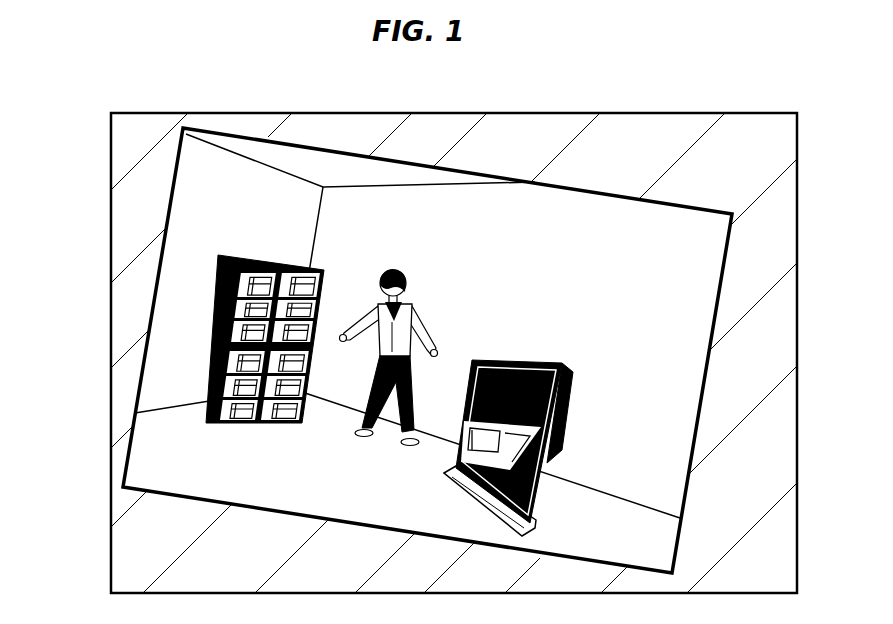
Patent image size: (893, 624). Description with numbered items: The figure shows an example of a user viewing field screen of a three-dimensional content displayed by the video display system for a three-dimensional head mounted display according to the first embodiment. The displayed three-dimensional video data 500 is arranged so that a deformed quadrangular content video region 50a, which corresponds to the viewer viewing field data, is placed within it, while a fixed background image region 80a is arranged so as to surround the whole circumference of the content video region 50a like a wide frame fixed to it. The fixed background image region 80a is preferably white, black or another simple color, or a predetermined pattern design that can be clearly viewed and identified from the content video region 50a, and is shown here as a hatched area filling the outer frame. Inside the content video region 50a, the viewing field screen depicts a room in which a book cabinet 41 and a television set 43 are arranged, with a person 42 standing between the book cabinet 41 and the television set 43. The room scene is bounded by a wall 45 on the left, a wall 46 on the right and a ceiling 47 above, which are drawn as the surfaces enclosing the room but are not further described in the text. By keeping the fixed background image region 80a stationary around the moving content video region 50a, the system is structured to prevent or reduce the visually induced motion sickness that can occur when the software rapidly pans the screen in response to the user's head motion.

The three-dimensional video data 500 is at (524, 113).
The content video region 50a is at (172, 304).
The fixed background image region 80a is at (134, 533).
The book cabinet 41 is at (262, 256).
The person 42 is at (424, 278).
The television set 43 is at (540, 360).
The left wall 45 is at (197, 192).
The right wall 46 is at (688, 237).
The ceiling 47 is at (285, 155).